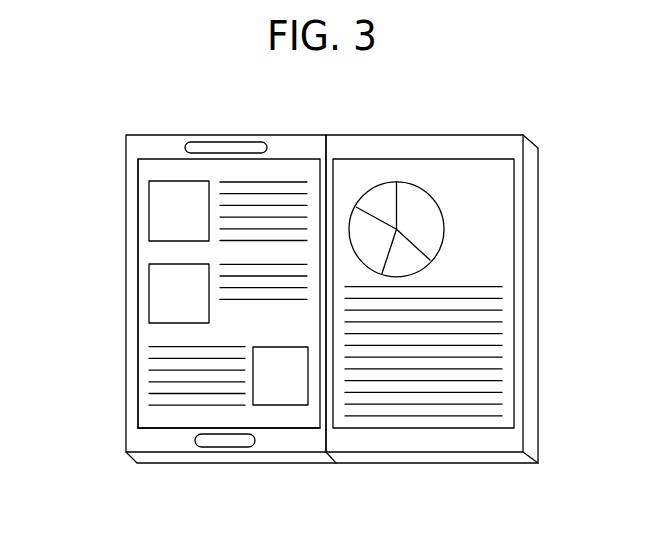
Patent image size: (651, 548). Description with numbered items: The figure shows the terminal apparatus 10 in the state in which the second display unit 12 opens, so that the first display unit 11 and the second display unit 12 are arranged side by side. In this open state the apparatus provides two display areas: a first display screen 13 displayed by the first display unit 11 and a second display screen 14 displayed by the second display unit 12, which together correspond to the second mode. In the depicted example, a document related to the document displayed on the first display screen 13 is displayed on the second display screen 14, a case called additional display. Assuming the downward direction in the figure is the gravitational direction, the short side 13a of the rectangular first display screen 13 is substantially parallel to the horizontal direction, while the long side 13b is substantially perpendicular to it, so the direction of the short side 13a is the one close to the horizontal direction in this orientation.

The terminal apparatus 10 is at (60, 103).
The first display unit 11 is at (173, 135).
The second display unit 12 is at (483, 135).
The first display screen 13 is at (138, 202).
The short side 13a is at (173, 428).
The long side 13b is at (138, 300).
The second display screen 14 is at (514, 207).